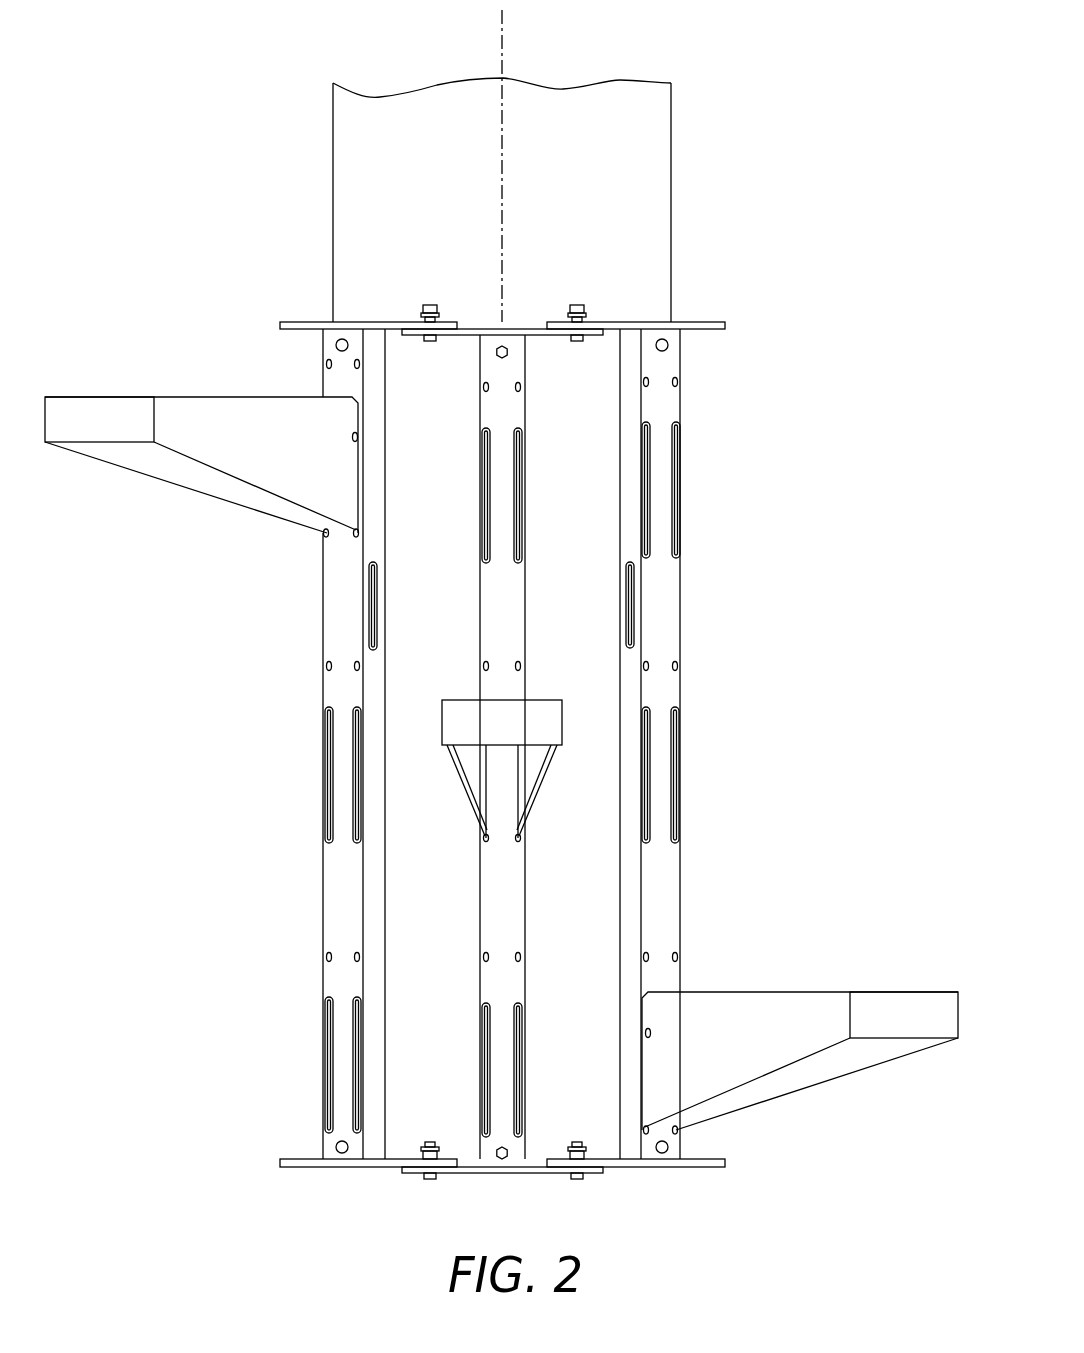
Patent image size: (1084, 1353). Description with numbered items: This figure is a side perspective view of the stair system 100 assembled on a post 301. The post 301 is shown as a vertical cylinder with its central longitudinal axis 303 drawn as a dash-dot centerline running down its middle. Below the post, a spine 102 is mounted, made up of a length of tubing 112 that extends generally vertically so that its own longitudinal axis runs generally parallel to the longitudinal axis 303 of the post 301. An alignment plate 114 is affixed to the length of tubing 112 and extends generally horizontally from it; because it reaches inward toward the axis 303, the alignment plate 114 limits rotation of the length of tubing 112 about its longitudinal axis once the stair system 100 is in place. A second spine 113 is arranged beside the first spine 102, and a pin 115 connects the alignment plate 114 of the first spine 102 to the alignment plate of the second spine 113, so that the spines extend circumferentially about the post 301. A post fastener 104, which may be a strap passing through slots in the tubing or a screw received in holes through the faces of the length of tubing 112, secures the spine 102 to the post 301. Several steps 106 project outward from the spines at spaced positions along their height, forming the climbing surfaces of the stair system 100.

The stair system 100 is at (698, 511).
The spine 102 is at (501, 744).
The post fastener 104 is at (668, 344).
The step 106 is at (112, 396).
The length of tubing 112 is at (505, 933).
The second spine 113 is at (328, 1168).
The alignment plate 114 is at (543, 1173).
The pin 115 is at (432, 1181).
The post 301 is at (671, 143).
The longitudinal axis 303 is at (503, 43).